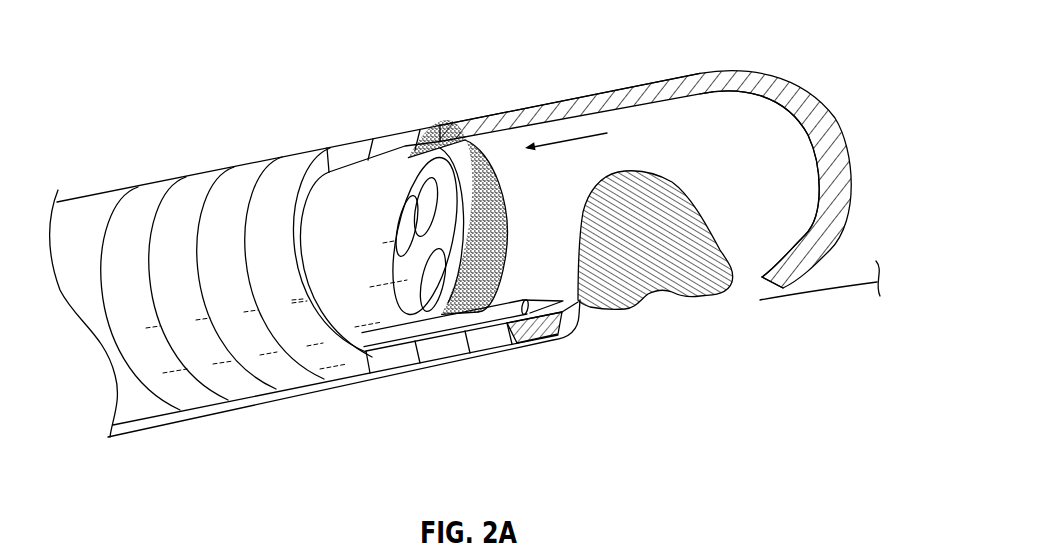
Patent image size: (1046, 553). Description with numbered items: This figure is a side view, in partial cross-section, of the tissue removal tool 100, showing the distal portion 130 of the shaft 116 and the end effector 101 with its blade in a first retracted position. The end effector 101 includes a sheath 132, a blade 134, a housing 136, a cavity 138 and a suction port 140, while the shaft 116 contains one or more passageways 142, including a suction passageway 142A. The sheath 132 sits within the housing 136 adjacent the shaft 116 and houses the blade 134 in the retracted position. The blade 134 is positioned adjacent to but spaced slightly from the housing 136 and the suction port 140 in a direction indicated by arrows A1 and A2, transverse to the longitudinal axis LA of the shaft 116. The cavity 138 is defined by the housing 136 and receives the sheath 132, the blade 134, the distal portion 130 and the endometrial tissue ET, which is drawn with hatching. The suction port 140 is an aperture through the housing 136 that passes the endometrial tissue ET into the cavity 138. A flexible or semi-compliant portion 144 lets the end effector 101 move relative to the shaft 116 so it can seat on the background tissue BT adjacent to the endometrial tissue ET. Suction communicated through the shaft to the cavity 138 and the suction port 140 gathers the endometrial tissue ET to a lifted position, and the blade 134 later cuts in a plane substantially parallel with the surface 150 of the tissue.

The tissue removal tool 100 is at (743, 40).
The end effector 101 is at (104, 360).
The shaft 116 is at (364, 160).
The distal portion 130 is at (364, 160).
The sheath 132 is at (517, 305).
The blade 134 is at (523, 345).
The housing 136 is at (793, 78).
The cavity 138 is at (790, 141).
The suction port 140 is at (751, 277).
The passageways 142 is at (411, 168).
The suction passageway 142A is at (436, 192).
The flexible or semi-compliant portion 144 is at (198, 190).
The surface 150 is at (338, 388).
The longitudinal axis LA is at (478, 227).
The endometrial tissue ET is at (656, 174).
The background tissue BT is at (683, 340).
The arrow A1 is at (588, 312).
The arrow A2 is at (732, 262).